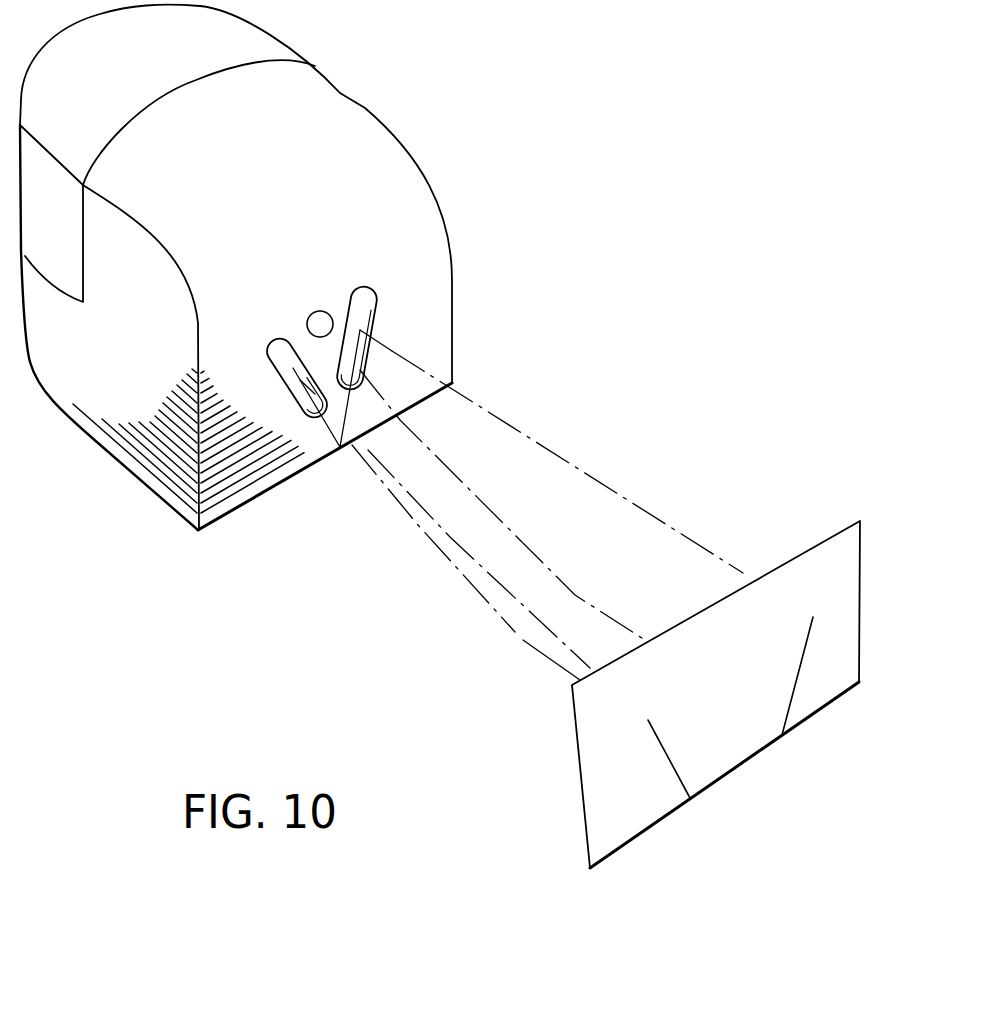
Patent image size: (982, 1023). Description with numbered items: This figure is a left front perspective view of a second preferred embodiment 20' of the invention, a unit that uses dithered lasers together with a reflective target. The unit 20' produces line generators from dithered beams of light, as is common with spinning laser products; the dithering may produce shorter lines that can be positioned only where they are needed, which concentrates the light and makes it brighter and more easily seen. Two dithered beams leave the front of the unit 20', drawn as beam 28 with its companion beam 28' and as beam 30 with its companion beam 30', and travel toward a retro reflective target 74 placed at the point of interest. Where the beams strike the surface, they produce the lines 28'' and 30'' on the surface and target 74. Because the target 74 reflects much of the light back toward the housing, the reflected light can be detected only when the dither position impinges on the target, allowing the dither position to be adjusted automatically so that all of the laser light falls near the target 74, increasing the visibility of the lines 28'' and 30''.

The second preferred embodiment 20' is at (246, 267).
The first beam (upper edge) 28 is at (551, 451).
The first beam (lower edge) 28' is at (504, 506).
The line 28'' is at (852, 676).
The second beam (upper edge) 30 is at (427, 538).
The second beam (lower edge) 30' is at (479, 587).
The line 30'' is at (602, 759).
The retro reflective target 74 is at (802, 553).